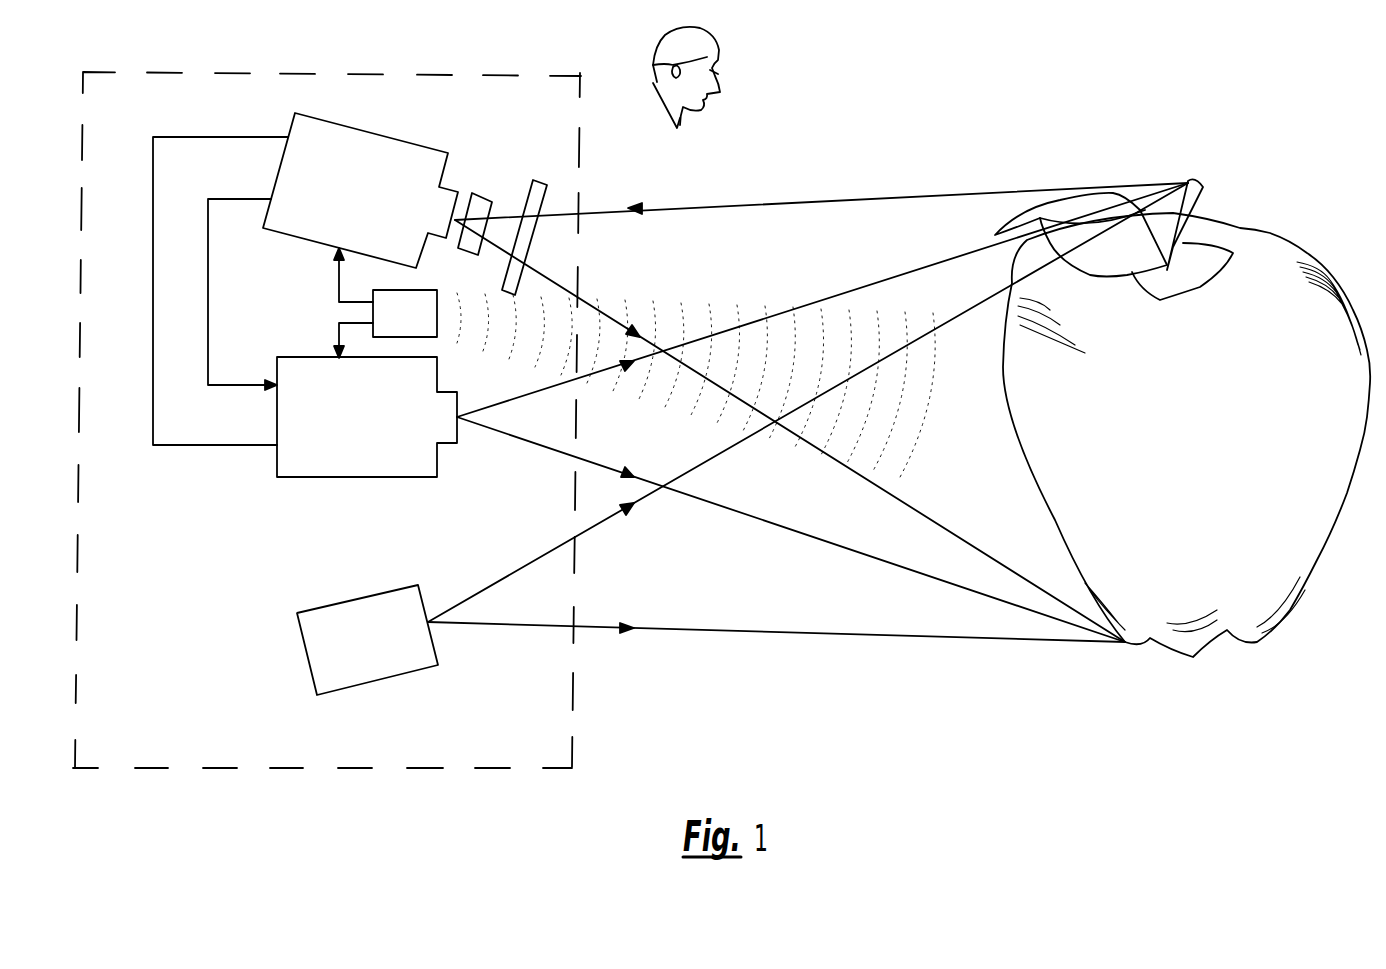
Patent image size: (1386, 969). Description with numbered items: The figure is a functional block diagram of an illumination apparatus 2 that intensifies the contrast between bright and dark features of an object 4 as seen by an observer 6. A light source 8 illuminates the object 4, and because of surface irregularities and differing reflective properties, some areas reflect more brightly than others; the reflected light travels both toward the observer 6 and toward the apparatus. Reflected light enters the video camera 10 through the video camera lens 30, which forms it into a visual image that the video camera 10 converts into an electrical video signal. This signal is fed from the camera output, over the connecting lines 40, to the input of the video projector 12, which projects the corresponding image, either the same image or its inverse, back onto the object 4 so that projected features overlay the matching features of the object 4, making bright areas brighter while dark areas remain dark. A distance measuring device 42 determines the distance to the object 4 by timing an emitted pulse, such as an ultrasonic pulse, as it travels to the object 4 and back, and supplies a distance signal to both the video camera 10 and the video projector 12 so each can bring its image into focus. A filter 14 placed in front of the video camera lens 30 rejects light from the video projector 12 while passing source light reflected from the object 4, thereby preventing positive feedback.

The illumination apparatus 2 is at (165, 71).
The object 4 is at (1280, 232).
The observer 6 is at (653, 68).
The light source 8 is at (300, 647).
The video camera 10 is at (291, 120).
The video projector 12 is at (422, 480).
The filter 14 is at (541, 178).
The video camera lens 30 is at (488, 193).
The connection lines 40 is at (153, 254).
The distance measuring device 42 is at (385, 303).